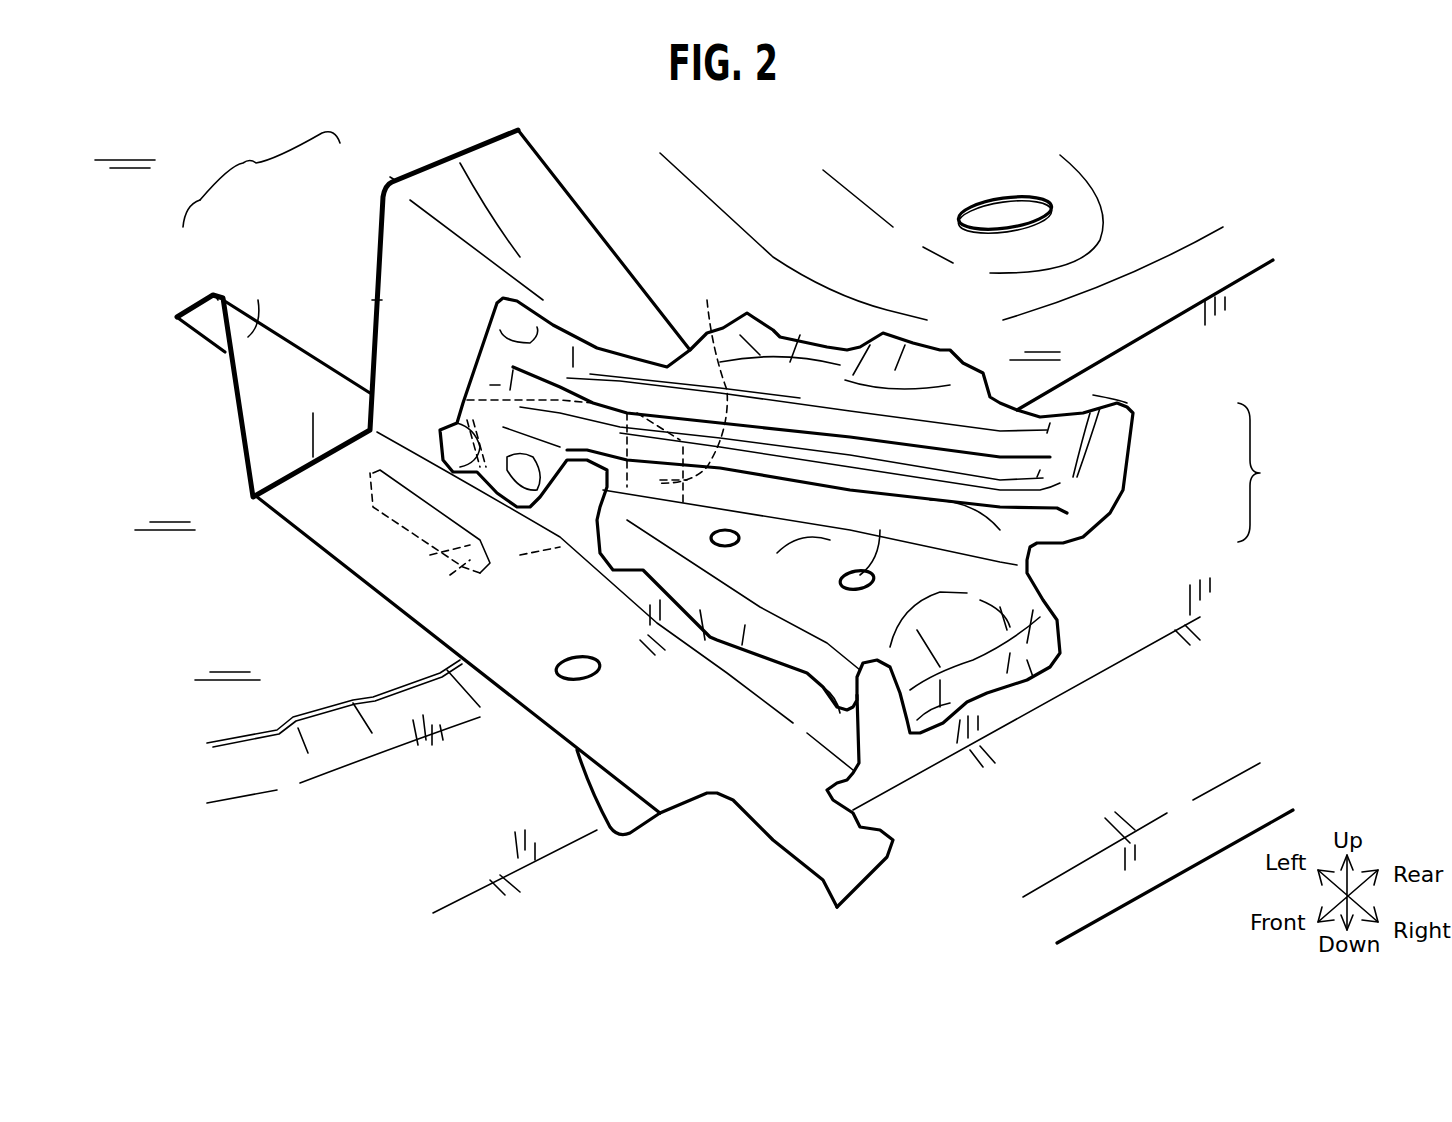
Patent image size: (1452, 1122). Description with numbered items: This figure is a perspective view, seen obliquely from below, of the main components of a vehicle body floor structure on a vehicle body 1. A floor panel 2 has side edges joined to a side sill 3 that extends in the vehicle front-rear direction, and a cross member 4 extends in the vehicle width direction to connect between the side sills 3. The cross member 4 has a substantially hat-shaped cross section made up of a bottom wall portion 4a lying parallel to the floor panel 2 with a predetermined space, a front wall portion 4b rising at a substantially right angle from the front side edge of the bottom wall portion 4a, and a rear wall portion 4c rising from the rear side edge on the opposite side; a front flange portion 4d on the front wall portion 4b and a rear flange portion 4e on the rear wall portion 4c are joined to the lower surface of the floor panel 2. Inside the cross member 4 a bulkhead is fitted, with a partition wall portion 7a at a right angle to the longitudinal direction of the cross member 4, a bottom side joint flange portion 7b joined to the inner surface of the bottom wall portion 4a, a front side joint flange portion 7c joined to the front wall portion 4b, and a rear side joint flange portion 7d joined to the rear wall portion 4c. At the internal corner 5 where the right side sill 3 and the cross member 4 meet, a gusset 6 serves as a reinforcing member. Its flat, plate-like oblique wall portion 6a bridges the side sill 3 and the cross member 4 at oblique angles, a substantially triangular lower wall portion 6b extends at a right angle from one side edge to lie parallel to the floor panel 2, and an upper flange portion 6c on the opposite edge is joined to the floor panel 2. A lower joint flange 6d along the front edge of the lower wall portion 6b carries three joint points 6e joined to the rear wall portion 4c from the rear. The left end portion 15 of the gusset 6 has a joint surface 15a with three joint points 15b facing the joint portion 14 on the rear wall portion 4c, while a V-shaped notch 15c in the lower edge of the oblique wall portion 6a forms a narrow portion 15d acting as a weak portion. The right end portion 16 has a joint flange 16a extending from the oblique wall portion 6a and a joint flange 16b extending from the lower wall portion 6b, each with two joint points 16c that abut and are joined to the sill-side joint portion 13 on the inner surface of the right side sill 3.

The vehicle body 1 is at (1172, 155).
The floor panel 2 is at (900, 197).
The side sill 3 is at (1157, 613).
The cross member 4 is at (433, 313).
The bottom wall portion 4a is at (313, 413).
The front wall portion 4b is at (258, 300).
The rear wall portion 4c is at (372, 300).
The front flange portion 4d is at (215, 295).
The rear flange portion 4e is at (390, 177).
The internal corner 5 is at (887, 743).
The gusset 6 is at (787, 565).
The oblique wall portion 6a is at (940, 410).
The lower wall portion 6b is at (923, 570).
The upper flange portion 6c is at (843, 380).
The lower joint flange 6d is at (758, 635).
The joint points 6e is at (622, 553).
The partition wall portion 7a is at (570, 545).
The bottom side joint flange portion 7b is at (497, 530).
The front side joint flange portion 7c is at (430, 527).
The rear side joint flange portion 7d is at (678, 386).
The sill-side joint portion 13 is at (1107, 420).
The joint portion 14 is at (490, 384).
The left end portion 15 is at (440, 359).
The joint surface 15a is at (517, 357).
The joint points 15b is at (520, 467).
The notch 15c is at (580, 477).
The narrow portion 15d is at (600, 363).
The right end portion 16 is at (1107, 609).
The joint flange 16a is at (1113, 440).
The joint flange 16b is at (1040, 635).
The joint points 16c is at (1120, 397).